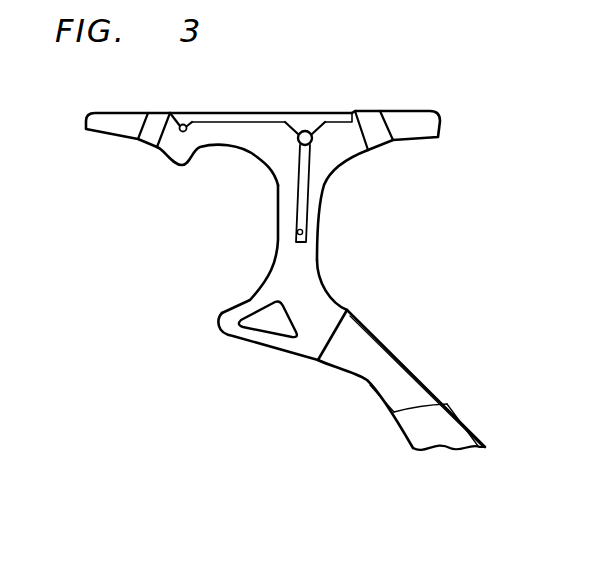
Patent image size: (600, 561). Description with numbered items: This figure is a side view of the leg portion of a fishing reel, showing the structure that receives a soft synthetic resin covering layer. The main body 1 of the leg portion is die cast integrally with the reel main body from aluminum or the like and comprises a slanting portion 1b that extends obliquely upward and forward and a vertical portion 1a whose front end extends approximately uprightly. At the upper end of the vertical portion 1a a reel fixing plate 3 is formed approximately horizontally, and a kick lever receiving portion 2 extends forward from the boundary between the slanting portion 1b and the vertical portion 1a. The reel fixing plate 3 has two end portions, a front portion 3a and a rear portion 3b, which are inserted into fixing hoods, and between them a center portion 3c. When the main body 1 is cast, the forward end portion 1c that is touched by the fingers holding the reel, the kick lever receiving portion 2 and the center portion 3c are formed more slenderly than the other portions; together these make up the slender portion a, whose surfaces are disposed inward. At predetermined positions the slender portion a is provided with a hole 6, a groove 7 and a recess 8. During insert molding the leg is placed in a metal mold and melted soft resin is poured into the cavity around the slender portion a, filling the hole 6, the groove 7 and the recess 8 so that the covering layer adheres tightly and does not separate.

The main body of leg portion 1 is at (388, 336).
The vertical portion 1a is at (277, 231).
The slanting portion 1b is at (415, 380).
The forward end portion 1c is at (327, 194).
The kick lever receiving portion 2 is at (228, 324).
The reel fixing plate 3 is at (254, 112).
The front portion of reel fixing plate 3a is at (113, 118).
The rear portion of reel fixing plate 3b is at (412, 125).
The center portion of reel fixing plate 3c is at (242, 139).
The hole 6 is at (184, 124).
The groove 7 is at (303, 233).
The recess 8 is at (262, 328).
The slender portion a is at (323, 279).